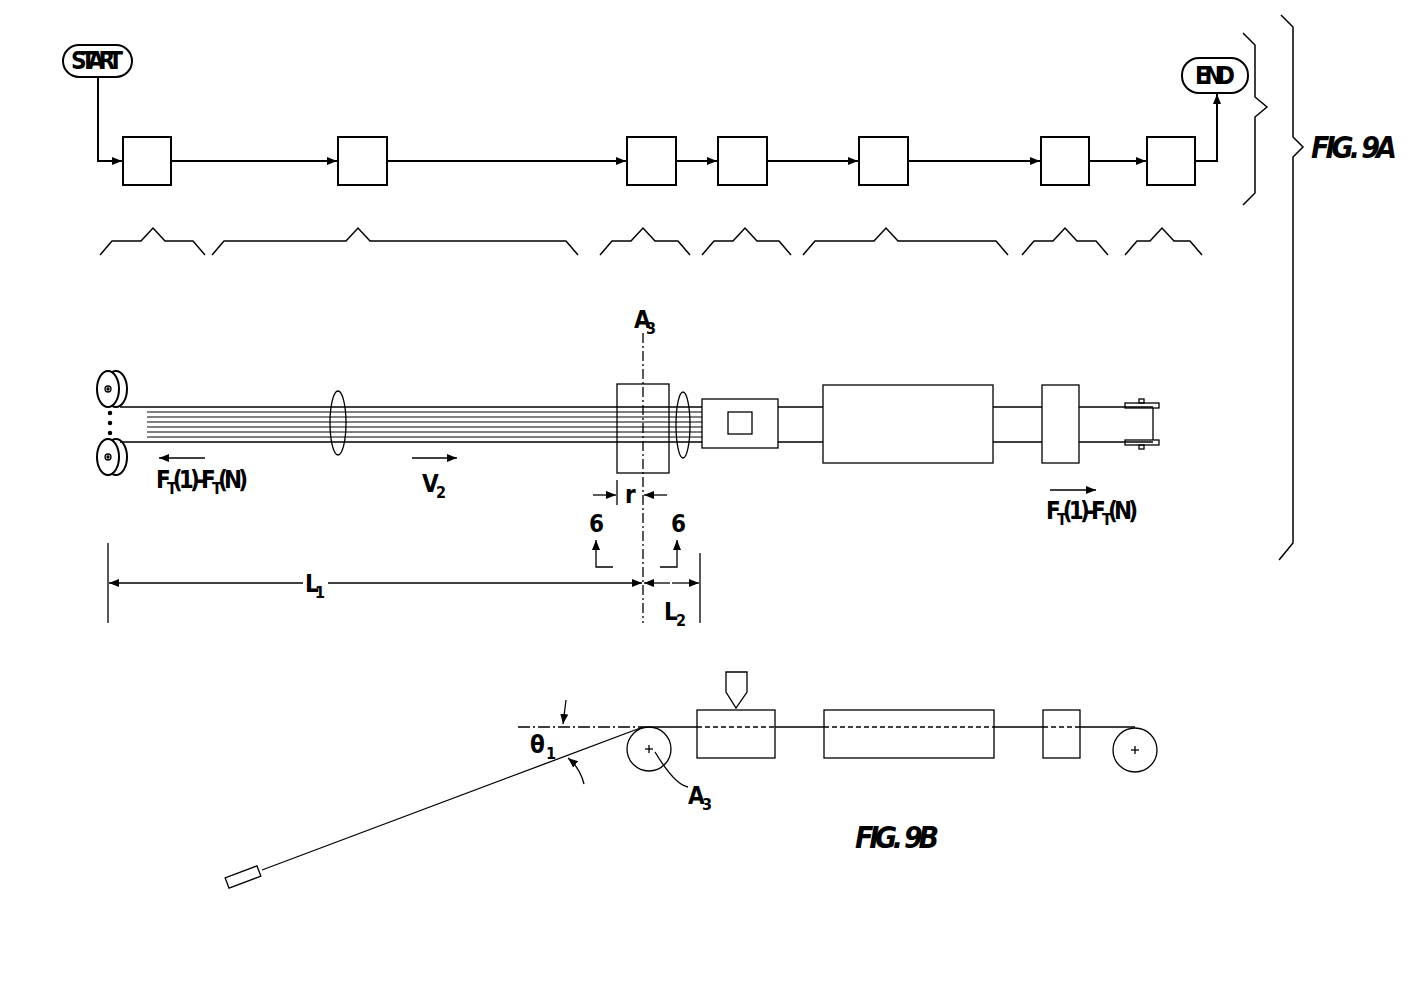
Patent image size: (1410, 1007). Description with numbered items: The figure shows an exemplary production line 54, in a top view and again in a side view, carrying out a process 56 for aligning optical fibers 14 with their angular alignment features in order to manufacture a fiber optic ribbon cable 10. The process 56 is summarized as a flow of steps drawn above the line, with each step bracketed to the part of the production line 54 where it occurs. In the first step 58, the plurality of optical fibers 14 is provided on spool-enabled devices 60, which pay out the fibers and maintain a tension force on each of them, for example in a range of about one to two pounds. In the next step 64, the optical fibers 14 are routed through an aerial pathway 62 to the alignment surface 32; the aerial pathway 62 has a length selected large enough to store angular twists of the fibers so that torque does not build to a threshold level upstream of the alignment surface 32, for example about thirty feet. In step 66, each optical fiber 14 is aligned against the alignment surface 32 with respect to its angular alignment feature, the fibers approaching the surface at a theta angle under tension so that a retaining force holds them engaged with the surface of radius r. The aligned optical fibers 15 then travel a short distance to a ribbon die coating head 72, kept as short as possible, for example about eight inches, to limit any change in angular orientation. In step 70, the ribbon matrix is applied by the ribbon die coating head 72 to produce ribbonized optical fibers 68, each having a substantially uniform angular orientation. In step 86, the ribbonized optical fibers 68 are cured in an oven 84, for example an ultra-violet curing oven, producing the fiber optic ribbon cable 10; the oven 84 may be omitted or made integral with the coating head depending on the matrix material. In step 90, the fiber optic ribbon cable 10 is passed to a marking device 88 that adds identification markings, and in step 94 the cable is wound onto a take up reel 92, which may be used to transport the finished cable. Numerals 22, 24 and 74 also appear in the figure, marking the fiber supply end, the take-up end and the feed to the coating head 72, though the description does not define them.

In FIG. 9A, the fiber optic ribbon cable 10 is at (1018, 406).
In FIG. 9B, the fiber optic ribbon cable 10 is at (1010, 726).
In FIG. 9A, the optical fibers 14 is at (340, 392).
In FIG. 9B, the optical fibers 14 is at (363, 839).
In FIG. 9A, the aligned optical fibers 15 is at (683, 392).
In FIG. 9B, the aligned optical fibers 15 is at (672, 722).
In FIG. 9A, the fiber payoff station 22 is at (116, 421).
In FIG. 9A, the take-up station 24 is at (1131, 332).
In FIG. 9B, the take-up station 24 is at (1130, 717).
In FIG. 9A, the alignment surface 32 is at (622, 393).
In FIG. 9A, the production line 54 is at (1238, 324).
In FIG. 9B, the production line 54 is at (1169, 632).
In FIG. 9A, the process 56 is at (1266, 119).
In FIG. 9A, the first step 58 is at (136, 175).
In FIG. 9A, the spool-enabled devices 60 is at (113, 370).
In FIG. 9B, the spool-enabled devices 60 is at (240, 866).
In FIG. 9A, the aerial pathway 62 is at (465, 385).
In FIG. 9B, the aerial pathway 62 is at (390, 800).
In FIG. 9A, the step 64 is at (351, 175).
In FIG. 9A, the step 66 is at (640, 175).
In FIG. 9A, the ribbonized optical fibers 68 is at (797, 408).
In FIG. 9B, the ribbonized optical fibers 68 is at (793, 726).
In FIG. 9A, the step 70 is at (731, 175).
In FIG. 9A, the ribbon die coating head 72 is at (773, 449).
In FIG. 9B, the ribbon die coating head 72 is at (742, 759).
In FIG. 9A, the coating material supply 74 is at (740, 411).
In FIG. 9B, the coating material supply 74 is at (738, 671).
In FIG. 9A, the oven 84 is at (945, 384).
In FIG. 9B, the oven 84 is at (878, 709).
In FIG. 9A, the step 86 is at (872, 175).
In FIG. 9A, the marking device 88 is at (1060, 384).
In FIG. 9B, the marking device 88 is at (1060, 709).
In FIG. 9A, the step 90 is at (1054, 175).
In FIG. 9A, the take up reel 92 is at (1133, 400).
In FIG. 9B, the take up reel 92 is at (1135, 773).
In FIG. 9A, the step 94 is at (1160, 175).